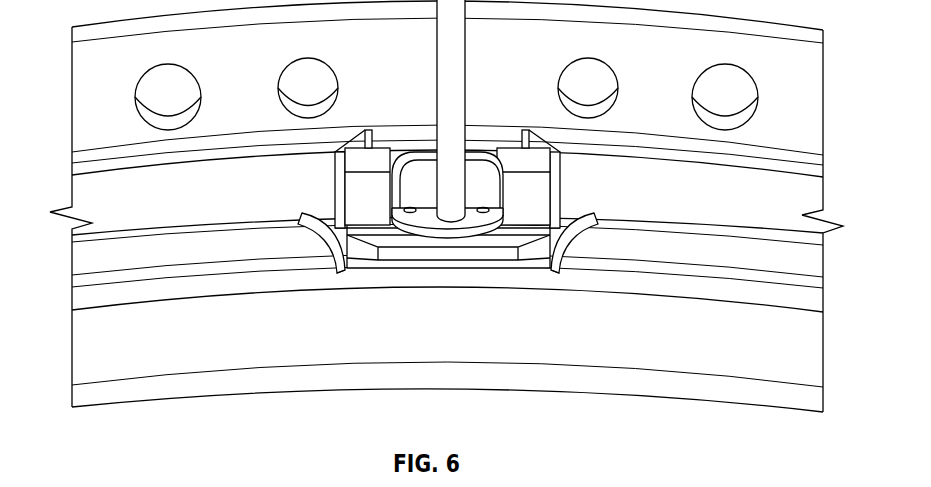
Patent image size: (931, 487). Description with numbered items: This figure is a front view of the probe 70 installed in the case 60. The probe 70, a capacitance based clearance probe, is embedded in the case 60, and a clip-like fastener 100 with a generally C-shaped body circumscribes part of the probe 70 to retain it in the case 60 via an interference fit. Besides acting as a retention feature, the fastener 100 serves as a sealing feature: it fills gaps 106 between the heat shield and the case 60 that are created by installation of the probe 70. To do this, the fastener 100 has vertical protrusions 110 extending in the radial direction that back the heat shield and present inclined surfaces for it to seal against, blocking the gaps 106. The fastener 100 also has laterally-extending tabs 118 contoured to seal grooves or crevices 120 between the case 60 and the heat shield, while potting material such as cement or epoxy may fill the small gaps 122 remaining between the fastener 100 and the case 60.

The case 60 is at (492, 334).
The probe 70 is at (425, 178).
The fastener 100 is at (410, 250).
The gaps 106 is at (369, 130).
The vertical protrusions 110 is at (370, 182).
The laterally-extending tabs 118 is at (307, 219).
The grooves or crevices 120 is at (343, 263).
The small gaps 122 is at (340, 197).